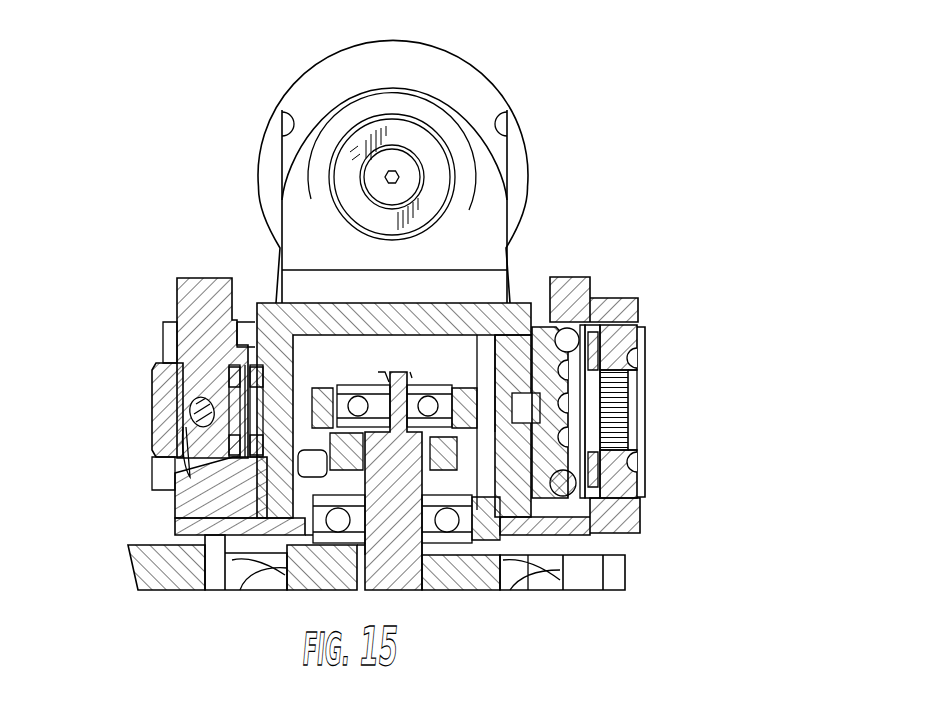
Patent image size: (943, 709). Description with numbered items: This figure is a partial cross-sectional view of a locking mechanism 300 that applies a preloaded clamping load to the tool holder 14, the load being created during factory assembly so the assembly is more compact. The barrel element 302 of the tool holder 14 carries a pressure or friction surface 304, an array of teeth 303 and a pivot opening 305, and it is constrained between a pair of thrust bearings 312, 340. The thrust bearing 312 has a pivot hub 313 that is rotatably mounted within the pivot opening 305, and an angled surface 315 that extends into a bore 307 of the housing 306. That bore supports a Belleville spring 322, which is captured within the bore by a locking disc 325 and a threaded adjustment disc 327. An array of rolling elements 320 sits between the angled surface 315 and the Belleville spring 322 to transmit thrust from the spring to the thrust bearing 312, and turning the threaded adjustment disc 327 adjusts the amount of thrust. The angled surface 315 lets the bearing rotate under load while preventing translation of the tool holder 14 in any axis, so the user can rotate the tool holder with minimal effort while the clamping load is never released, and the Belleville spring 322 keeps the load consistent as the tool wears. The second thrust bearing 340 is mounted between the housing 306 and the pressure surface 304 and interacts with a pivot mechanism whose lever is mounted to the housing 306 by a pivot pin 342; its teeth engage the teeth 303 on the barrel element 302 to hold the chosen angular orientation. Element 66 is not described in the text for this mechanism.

The tool holder 14 is at (406, 104).
The ball 66 is at (563, 342).
The locking mechanism 300 is at (672, 303).
The barrel element 302 is at (512, 305).
The array of teeth 303 is at (247, 333).
The pressure surface 304 is at (257, 303).
The pivot opening 305 is at (488, 412).
The housing 306 is at (615, 300).
The bore 307 is at (643, 352).
The thrust bearing 312 is at (640, 513).
The pivot hub 313 is at (488, 412).
The angled surface 315 is at (482, 344).
The rolling elements 320 is at (600, 497).
The Belleville spring 322 is at (605, 457).
The locking disc 325 is at (647, 460).
The threaded adjustment disc 327 is at (647, 440).
The thrust bearing 340 is at (225, 380).
The pivot pin 342 is at (200, 412).